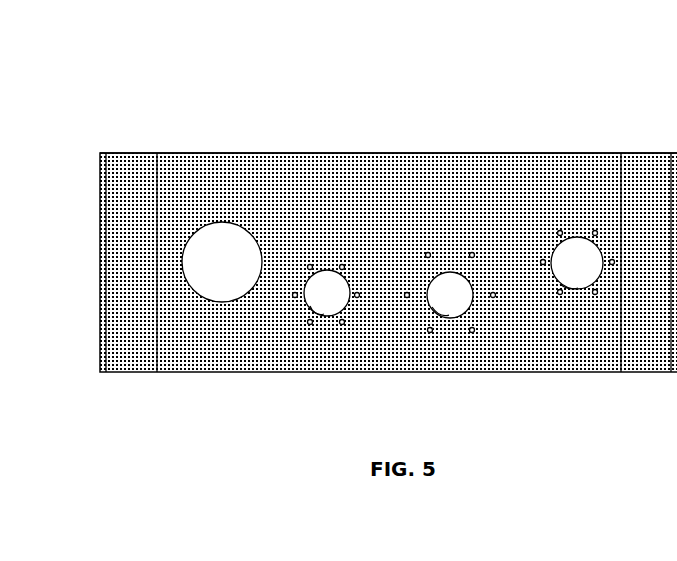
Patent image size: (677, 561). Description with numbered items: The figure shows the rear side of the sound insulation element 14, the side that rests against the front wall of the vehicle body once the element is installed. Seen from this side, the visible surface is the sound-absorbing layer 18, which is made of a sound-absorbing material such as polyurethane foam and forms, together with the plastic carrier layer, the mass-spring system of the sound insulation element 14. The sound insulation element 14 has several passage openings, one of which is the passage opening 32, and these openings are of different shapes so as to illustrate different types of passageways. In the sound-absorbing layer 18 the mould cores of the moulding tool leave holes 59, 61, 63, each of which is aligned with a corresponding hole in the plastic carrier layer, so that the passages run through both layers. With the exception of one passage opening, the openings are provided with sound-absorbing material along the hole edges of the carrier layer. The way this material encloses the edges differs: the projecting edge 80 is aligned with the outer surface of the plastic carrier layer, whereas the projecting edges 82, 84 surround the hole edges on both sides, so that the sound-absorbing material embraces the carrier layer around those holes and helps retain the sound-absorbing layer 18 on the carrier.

The sound insulation element 14 is at (395, 140).
The sound-absorbing layer 18 is at (520, 180).
The hole 63 is at (215, 263).
The hole 61 is at (318, 300).
The projecting edge 84 is at (317, 308).
The hole 59 is at (460, 297).
The projecting edge 82 is at (445, 305).
The projecting edge 80 is at (600, 253).
The passage opening 32 is at (573, 263).